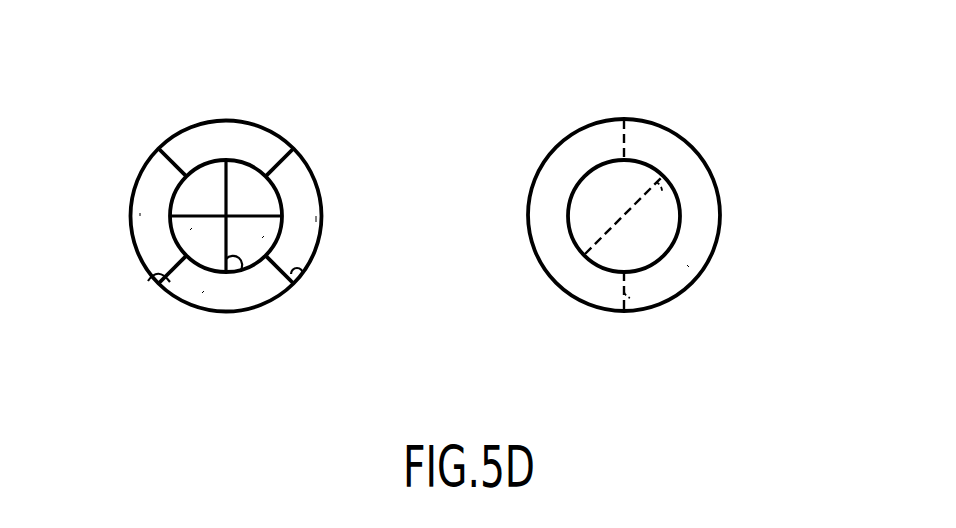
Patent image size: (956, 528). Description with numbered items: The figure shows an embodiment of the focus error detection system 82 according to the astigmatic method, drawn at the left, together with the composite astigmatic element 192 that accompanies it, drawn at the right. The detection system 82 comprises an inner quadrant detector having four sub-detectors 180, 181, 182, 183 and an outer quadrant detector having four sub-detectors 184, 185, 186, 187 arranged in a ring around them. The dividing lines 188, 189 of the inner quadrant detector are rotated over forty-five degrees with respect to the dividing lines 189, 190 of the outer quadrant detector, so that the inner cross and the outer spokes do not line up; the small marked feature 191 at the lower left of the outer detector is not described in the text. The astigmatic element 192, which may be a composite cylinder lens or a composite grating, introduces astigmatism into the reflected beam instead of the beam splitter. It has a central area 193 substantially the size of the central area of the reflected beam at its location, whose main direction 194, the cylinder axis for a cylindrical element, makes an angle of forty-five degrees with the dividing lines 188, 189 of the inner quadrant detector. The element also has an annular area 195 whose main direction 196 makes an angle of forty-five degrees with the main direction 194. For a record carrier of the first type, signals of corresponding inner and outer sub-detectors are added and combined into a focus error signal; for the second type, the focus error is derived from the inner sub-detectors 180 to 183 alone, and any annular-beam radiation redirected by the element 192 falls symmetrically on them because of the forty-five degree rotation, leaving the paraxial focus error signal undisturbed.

The detection system 82 is at (410, 129).
The sub-detector 180 is at (208, 180).
The sub-detector 181 is at (190, 230).
The sub-detector 182 is at (262, 238).
The sub-detector 183 is at (247, 183).
The sub-detector 184 is at (183, 148).
The sub-detector 185 is at (147, 213).
The sub-detector 186 is at (202, 293).
The sub-detector 187 is at (305, 222).
The dividing line 188 is at (276, 212).
The dividing line 189 is at (241, 273).
The dividing line 190 is at (300, 275).
The lower left hook 191 is at (155, 274).
The composite astigmatic element 192 is at (771, 126).
The central area 193 is at (660, 218).
The main direction 194 is at (653, 190).
The annular area 195 is at (687, 265).
The main direction 196 is at (625, 287).